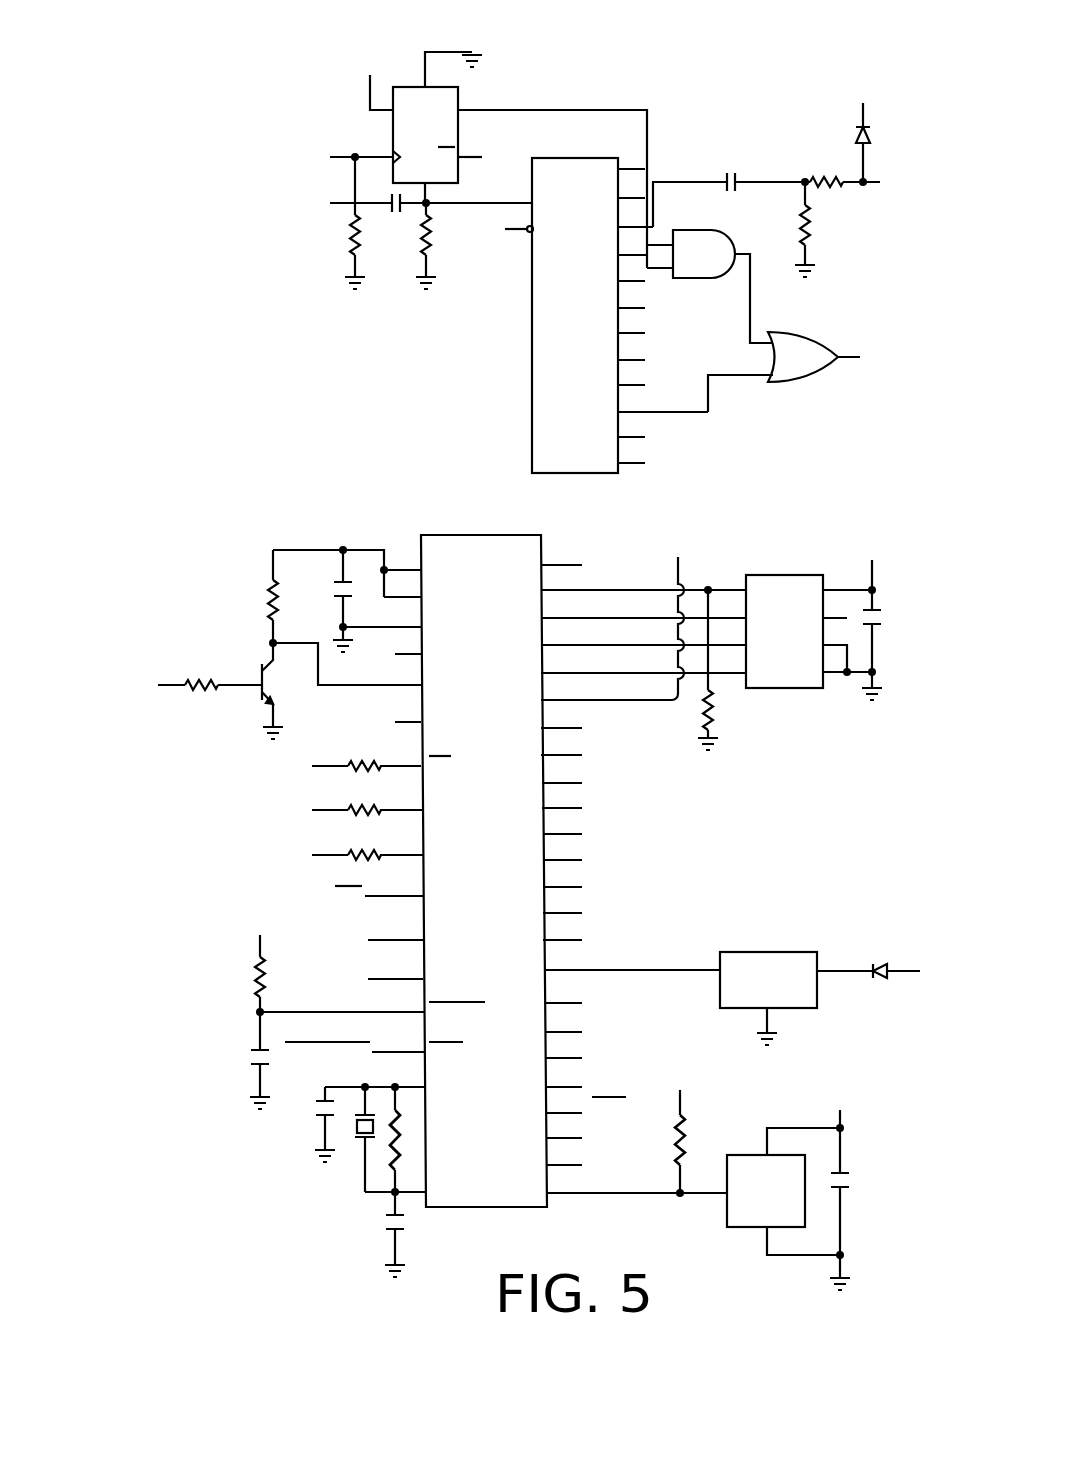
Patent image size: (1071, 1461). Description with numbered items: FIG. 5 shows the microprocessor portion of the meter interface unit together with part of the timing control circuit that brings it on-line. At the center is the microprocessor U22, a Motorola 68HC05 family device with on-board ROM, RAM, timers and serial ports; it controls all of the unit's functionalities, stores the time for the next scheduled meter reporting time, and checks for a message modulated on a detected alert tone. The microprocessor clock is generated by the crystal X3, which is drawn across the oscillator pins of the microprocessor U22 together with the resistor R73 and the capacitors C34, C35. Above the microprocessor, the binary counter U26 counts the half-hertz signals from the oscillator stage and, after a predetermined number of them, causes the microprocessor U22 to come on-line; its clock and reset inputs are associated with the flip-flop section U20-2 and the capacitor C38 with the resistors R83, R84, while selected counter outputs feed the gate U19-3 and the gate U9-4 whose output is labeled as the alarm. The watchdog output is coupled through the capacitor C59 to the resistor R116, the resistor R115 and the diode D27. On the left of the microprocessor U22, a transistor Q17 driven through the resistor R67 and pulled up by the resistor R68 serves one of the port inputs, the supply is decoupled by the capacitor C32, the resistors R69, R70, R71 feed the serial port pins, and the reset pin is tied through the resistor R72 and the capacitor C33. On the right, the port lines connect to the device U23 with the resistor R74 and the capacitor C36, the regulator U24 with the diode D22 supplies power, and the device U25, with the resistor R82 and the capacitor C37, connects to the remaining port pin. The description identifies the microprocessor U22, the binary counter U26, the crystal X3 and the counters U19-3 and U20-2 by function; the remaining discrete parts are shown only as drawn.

The counter U20-2 is at (410, 87).
The capacitor C38 is at (431, 190).
The resistor R83 is at (338, 223).
The resistor R84 is at (409, 246).
The binary counter U26 is at (583, 303).
The capacitor C59 is at (729, 187).
The resistor R116 is at (862, 173).
The diode D27 is at (875, 129).
The resistor R115 is at (791, 229).
The counter U19-3 is at (710, 286).
The OR gate U9-4 is at (817, 374).
The microprocessor U22 is at (413, 857).
The capacitor C32 is at (359, 601).
The resistor R68 is at (253, 598).
The resistor R67 is at (210, 671).
The transistor Q17 is at (341, 691).
The serial EEPROM U23 is at (788, 618).
The resistor R74 is at (725, 670).
The capacitor C36 is at (881, 616).
The resistor R69 is at (346, 756).
The resistor R70 is at (346, 799).
The resistor R71 is at (346, 844).
The resistor R72 is at (268, 961).
The capacitor C33 is at (241, 1060).
The capacitor C34 is at (336, 1124).
The crystal X3 is at (380, 1137).
The resistor R73 is at (409, 1139).
The capacitor C35 is at (373, 1234).
The voltage regulator U24 is at (767, 985).
The diode D22 is at (888, 958).
The resistor R82 is at (686, 1130).
The real-time clock / memory IC U25 is at (742, 1155).
The capacitor C37 is at (862, 1200).